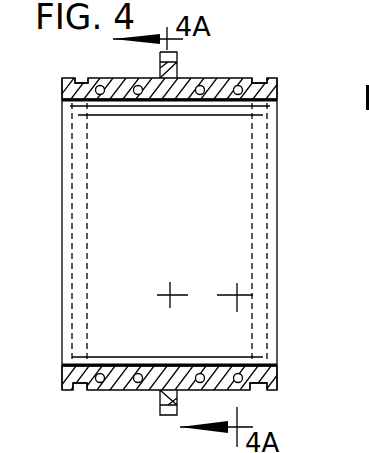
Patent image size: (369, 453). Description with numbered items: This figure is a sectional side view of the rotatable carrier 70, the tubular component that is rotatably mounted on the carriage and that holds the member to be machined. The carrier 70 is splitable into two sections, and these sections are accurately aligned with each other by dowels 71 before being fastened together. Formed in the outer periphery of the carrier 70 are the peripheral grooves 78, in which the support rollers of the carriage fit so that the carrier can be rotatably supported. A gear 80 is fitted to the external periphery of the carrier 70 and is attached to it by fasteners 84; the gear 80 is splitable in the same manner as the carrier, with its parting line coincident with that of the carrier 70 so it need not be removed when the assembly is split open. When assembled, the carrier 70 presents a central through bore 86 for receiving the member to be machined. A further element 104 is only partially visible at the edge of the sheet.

The rotatable carrier 70 is at (195, 77).
The dowels 71 is at (195, 368).
The peripheral grooves 78 is at (268, 78).
The gear 80 is at (160, 68).
The fasteners 84 is at (230, 368).
The central through bore 86 is at (162, 103).
The adjacent component (partial) 104 is at (252, 0).